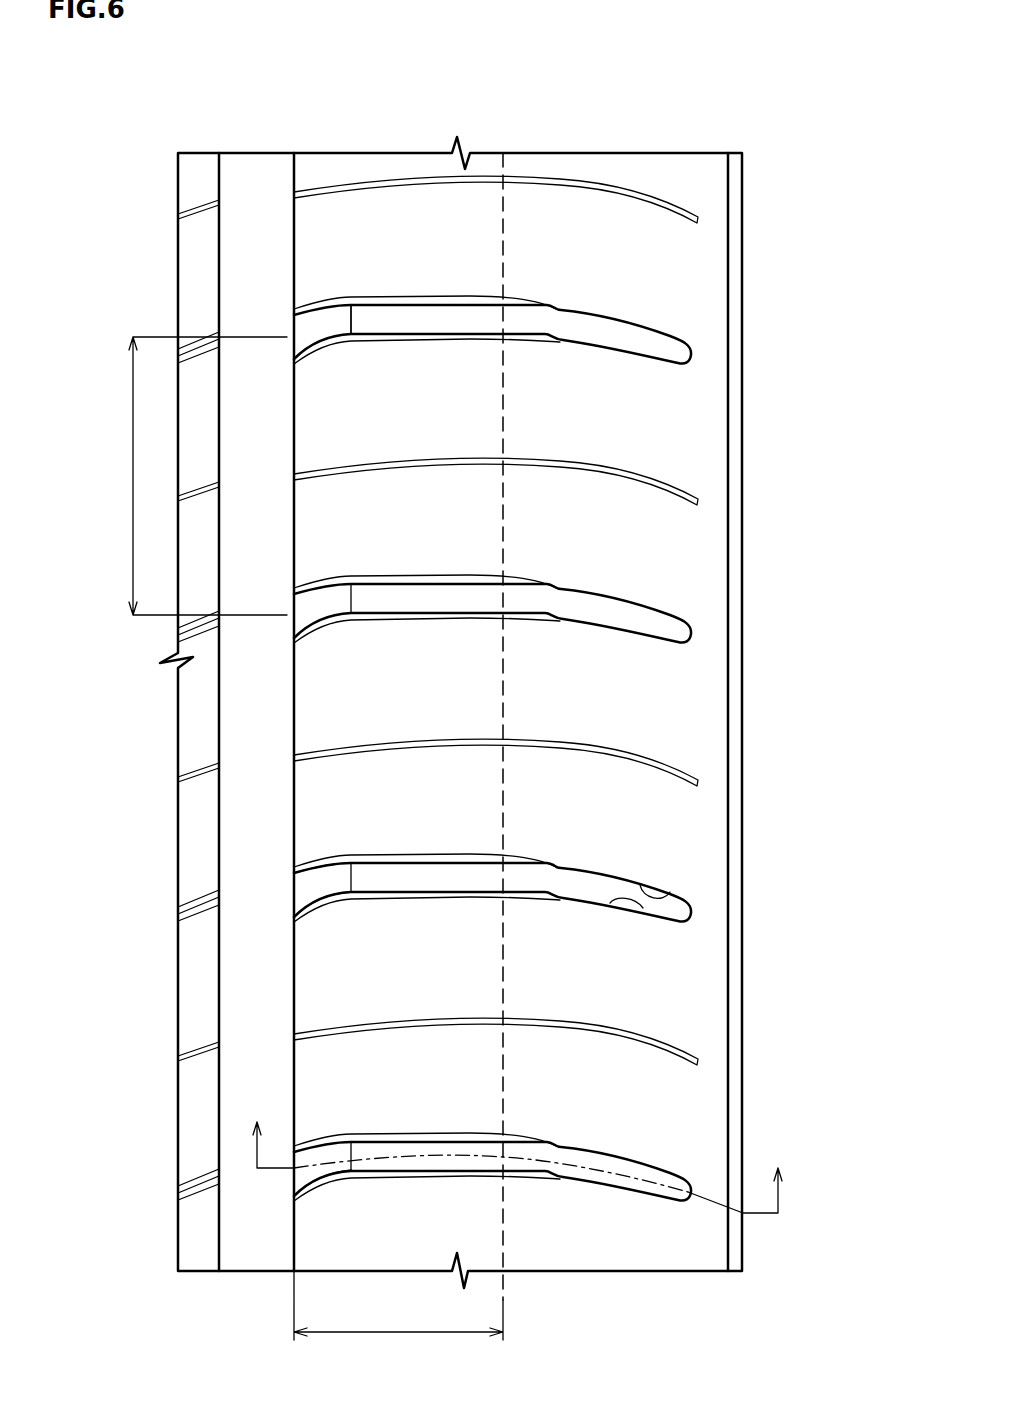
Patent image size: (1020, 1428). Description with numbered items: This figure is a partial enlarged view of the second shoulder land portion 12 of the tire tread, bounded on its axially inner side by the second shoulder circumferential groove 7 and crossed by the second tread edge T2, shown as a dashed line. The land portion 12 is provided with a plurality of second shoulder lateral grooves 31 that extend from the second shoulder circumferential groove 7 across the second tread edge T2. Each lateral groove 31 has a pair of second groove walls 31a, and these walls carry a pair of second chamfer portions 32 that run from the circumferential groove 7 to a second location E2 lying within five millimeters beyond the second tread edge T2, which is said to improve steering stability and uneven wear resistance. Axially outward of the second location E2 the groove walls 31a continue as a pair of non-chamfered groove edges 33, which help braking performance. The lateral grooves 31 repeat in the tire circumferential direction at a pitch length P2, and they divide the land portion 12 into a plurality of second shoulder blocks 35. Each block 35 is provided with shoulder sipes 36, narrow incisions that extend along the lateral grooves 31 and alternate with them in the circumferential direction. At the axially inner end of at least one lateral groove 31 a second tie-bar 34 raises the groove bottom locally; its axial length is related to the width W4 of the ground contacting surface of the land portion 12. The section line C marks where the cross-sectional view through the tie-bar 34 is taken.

The second shoulder circumferential groove 7 is at (258, 179).
The second shoulder land portion 12 is at (405, 206).
The second shoulder lateral groove 31 is at (463, 312).
The second groove wall 31a is at (378, 333).
The second chamfer portion 32 is at (323, 863).
The non-chamfered groove edge 33 is at (680, 893).
The second tie-bar 34 is at (320, 1168).
The second shoulder block 35 is at (364, 702).
The shoulder sipe 36 is at (472, 461).
The second tread edge T2 is at (505, 170).
The second location E2 is at (556, 868).
The pitch length P2 is at (188, 476).
The width of the ground contacting surface W4 is at (398, 1322).
The line C- C is at (517, 1154).